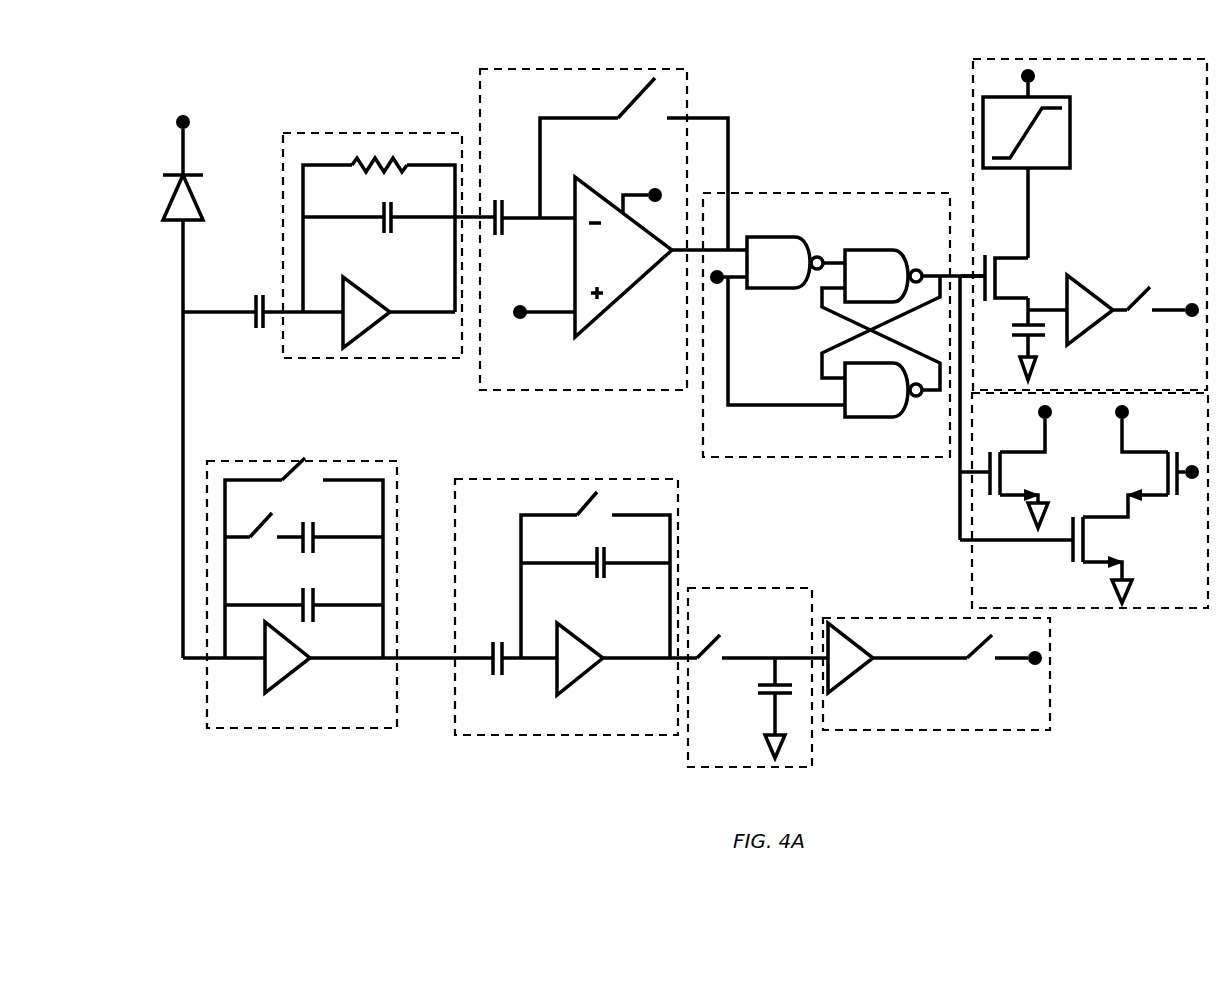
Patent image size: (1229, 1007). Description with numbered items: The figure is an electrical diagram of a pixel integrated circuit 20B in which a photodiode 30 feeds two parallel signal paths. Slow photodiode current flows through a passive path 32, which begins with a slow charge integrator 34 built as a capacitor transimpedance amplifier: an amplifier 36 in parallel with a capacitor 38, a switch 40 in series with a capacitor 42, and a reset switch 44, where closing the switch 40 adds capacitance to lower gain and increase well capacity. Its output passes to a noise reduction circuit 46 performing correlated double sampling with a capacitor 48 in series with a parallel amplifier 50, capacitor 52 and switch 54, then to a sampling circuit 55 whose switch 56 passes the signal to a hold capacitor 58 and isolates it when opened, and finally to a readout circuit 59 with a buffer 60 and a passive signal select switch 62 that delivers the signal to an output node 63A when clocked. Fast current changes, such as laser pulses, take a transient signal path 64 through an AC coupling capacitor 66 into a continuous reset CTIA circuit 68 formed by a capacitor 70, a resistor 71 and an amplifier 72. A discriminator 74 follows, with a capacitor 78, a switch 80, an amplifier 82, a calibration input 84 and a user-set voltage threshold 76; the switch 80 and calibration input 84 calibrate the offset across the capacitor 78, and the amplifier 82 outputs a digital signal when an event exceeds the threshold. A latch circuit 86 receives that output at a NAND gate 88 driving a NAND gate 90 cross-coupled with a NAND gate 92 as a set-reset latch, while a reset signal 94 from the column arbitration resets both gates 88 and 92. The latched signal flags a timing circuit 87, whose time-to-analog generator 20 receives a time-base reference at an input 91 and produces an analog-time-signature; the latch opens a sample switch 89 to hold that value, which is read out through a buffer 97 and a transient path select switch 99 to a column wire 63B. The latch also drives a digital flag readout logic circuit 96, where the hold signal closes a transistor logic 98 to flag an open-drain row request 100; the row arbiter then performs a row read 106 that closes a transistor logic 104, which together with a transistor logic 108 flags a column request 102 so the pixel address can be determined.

The time-to-analog generator 20 is at (1072, 163).
The pixel integrated circuit 20B is at (1112, 724).
The photodiode 30 is at (197, 200).
The passive path 32 is at (190, 415).
The slow charge integrator 34 is at (338, 575).
The amplifier 36 is at (293, 673).
The capacitor 38 is at (312, 607).
The switch 40 is at (258, 530).
The capacitor 42 is at (312, 523).
The reset switch 44 is at (307, 465).
The noise reduction circuit 46 is at (565, 583).
The capacitor 48 is at (493, 645).
The amplifier 50 is at (593, 670).
The capacitor 52 is at (608, 573).
The switch 54 is at (597, 500).
The sampling circuit 55 is at (758, 651).
The switch 56 is at (712, 637).
The hold capacitor 58 is at (768, 693).
The readout circuit 59 is at (936, 697).
The buffer 60 is at (857, 677).
The passive signal select switch 62 is at (977, 650).
The output terminal 63A is at (1035, 665).
The column wire 63B is at (1192, 318).
The transient signal path 64 is at (203, 308).
The AC coupling capacitor 66 is at (265, 328).
The continuous reset CTIA circuit 68 is at (383, 219).
The capacitor 70 is at (383, 212).
The resistor 71 is at (397, 170).
The amplifier 72 is at (387, 305).
The discriminator 74 is at (613, 252).
The voltage threshold 76 is at (520, 320).
The capacitor 78 is at (492, 207).
The switch 80 is at (633, 93).
The amplifier 82 is at (642, 273).
The calibration input 84 is at (655, 190).
The latch circuit 86 is at (844, 304).
The timing circuit 87 is at (1056, 224).
The NAND gate 88 is at (785, 237).
The sample switch 89 is at (1012, 258).
The NAND gate 90 is at (870, 250).
The input 91 is at (1038, 73).
The NAND gate 92 is at (868, 418).
The reset signal 94 is at (720, 285).
The digital flag readout logic circuit 96 is at (1084, 521).
The buffer 97 is at (1080, 280).
The transistor logic 98 is at (1010, 452).
The transient path select switch 99 is at (1133, 300).
The row request 100 is at (1050, 418).
The column request 102 is at (1118, 418).
The transistor logic 104 is at (1160, 452).
The row read 106 is at (1192, 480).
The transistor logic 108 is at (1103, 518).